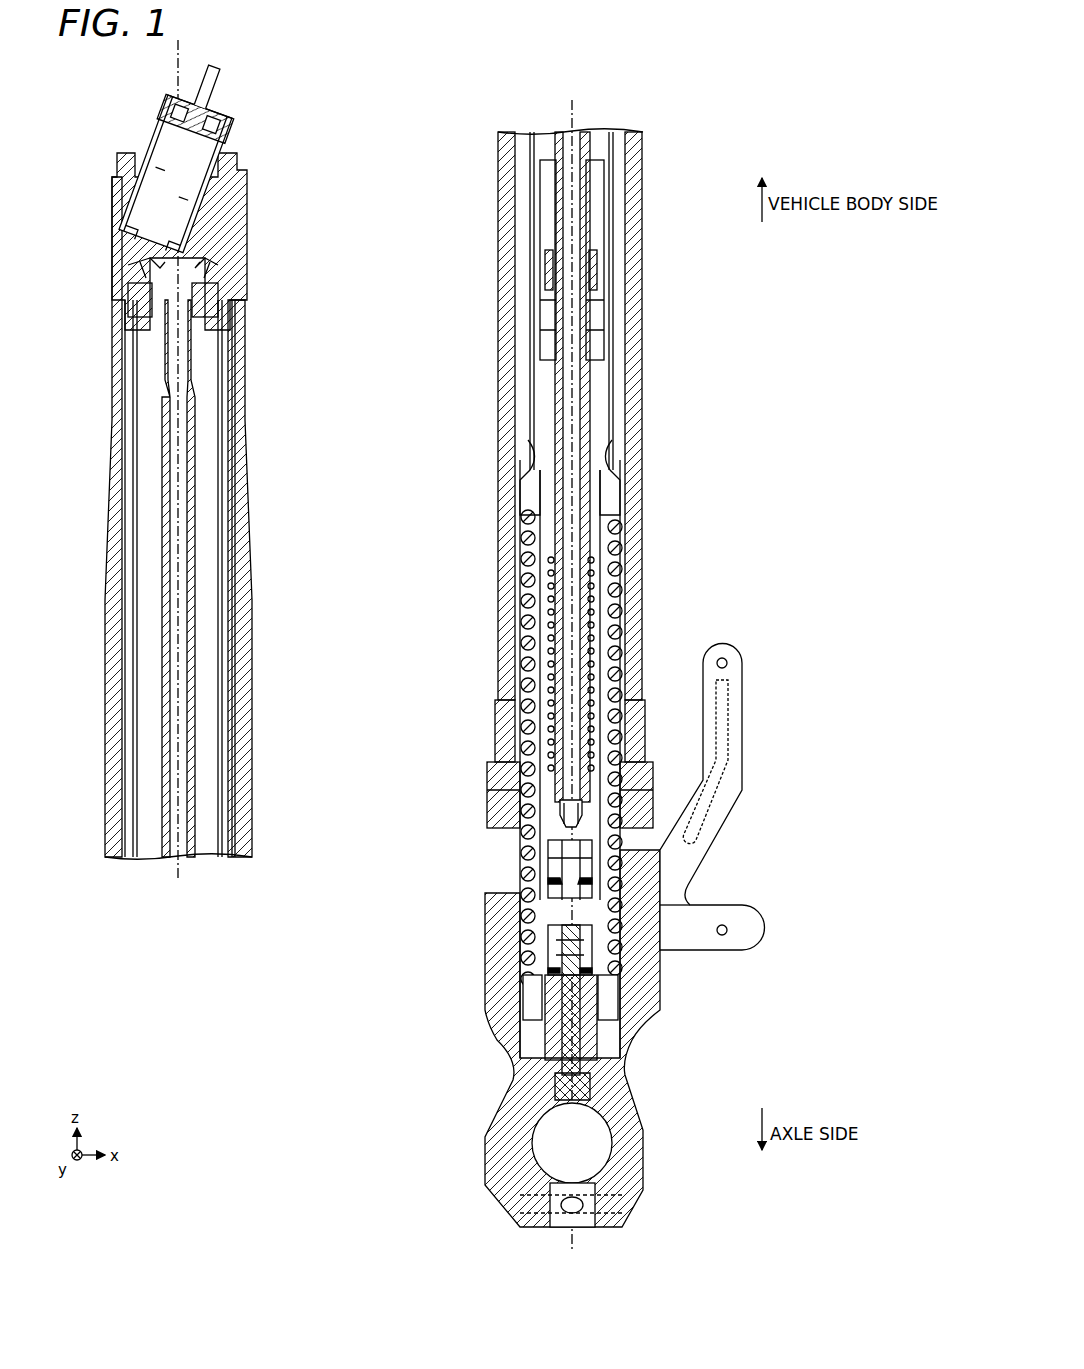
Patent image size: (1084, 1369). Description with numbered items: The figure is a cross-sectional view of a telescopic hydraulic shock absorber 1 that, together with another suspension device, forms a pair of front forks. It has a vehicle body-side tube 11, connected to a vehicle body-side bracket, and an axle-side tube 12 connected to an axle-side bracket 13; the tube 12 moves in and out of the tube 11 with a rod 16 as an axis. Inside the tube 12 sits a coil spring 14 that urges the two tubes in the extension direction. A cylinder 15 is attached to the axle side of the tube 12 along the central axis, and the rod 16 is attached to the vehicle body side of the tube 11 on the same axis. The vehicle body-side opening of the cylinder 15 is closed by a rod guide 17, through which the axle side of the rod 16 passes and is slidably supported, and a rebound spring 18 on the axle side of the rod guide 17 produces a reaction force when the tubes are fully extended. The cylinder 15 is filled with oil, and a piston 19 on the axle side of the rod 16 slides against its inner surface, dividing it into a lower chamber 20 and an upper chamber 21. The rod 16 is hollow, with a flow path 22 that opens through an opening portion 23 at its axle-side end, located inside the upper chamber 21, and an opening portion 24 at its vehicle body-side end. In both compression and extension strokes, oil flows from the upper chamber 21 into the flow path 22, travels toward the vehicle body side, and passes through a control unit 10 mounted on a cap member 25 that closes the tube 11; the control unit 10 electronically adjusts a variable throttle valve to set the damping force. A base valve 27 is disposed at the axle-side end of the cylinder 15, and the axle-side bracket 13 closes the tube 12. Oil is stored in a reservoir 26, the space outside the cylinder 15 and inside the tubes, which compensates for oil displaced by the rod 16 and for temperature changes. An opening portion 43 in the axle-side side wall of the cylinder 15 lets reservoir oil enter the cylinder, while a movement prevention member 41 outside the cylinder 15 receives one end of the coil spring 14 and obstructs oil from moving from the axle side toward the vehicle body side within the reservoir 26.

The hydraulic shock absorber 1 is at (743, 110).
The control unit 10 is at (130, 113).
The tube 11 is at (246, 482).
The tube 12 is at (665, 850).
The axle-side bracket 13 is at (641, 1140).
The coil spring 14 is at (622, 580).
The cylinder 15 is at (623, 532).
The rod 16 is at (197, 408).
The rod guide 17 is at (590, 318).
The rebound spring 18 is at (600, 628).
The piston 19 is at (548, 876).
The lower chamber 20 is at (661, 893).
The upper chamber 21 is at (508, 793).
The flow path 22 is at (180, 443).
The opening portion 23 is at (562, 806).
The opening portion 24 is at (178, 262).
The cap member 25 is at (230, 217).
The reservoir 26 is at (228, 374).
The base valve 27 is at (600, 965).
The movement prevention member 41 is at (620, 985).
The opening portion 43 is at (628, 1000).